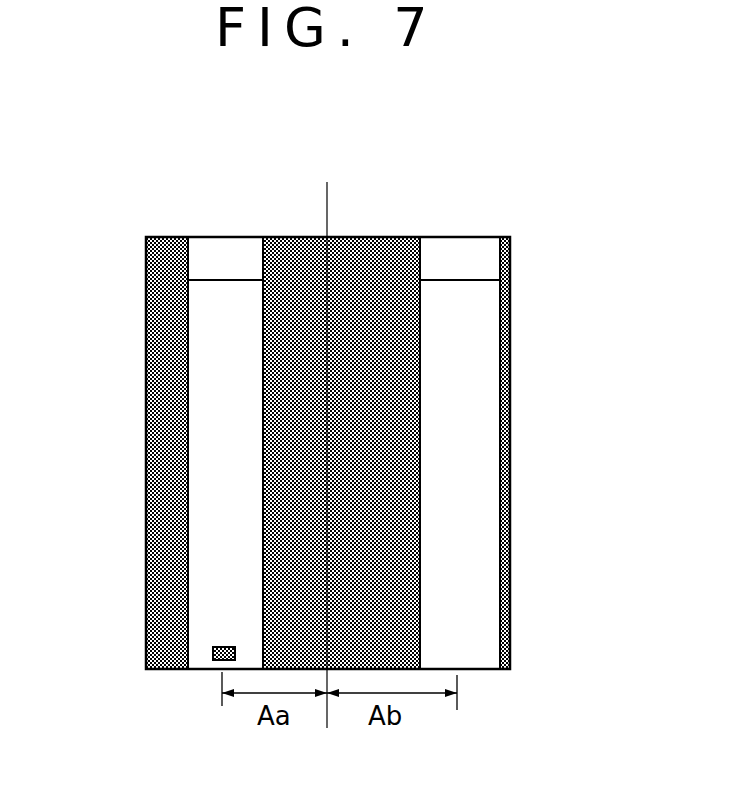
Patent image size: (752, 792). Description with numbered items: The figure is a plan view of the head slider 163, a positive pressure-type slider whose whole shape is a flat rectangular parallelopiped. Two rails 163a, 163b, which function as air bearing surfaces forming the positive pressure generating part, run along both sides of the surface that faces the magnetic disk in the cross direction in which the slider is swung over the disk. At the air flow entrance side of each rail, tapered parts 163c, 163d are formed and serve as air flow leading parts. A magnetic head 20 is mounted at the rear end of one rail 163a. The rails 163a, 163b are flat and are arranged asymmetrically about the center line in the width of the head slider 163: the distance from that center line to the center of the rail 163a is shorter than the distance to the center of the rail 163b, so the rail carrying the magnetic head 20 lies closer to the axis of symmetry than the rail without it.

The head slider 163 is at (289, 185).
The rail 163a is at (210, 437).
The rail 163b is at (468, 448).
The tapered part 163c is at (217, 255).
The tapered part 163d is at (457, 255).
The magnetic head 20 is at (207, 662).